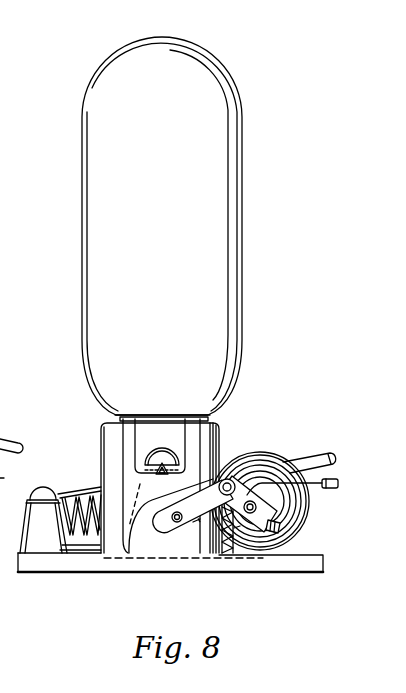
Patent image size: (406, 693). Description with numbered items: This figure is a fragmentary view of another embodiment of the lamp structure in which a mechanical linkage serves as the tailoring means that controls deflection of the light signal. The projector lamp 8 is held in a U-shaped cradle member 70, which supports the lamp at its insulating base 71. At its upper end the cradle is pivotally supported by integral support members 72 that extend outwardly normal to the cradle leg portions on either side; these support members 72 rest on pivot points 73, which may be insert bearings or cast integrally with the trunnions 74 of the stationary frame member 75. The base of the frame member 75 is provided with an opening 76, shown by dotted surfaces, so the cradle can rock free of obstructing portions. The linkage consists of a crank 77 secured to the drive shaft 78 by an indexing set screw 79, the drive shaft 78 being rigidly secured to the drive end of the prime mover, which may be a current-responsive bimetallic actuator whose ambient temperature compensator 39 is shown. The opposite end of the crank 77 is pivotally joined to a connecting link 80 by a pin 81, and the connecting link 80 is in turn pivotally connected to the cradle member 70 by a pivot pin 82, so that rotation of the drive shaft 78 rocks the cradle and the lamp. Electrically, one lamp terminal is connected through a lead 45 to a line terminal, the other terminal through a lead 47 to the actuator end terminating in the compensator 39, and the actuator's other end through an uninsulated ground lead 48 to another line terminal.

The projector lamp 8 is at (107, 240).
The U-shaped cradle member 70 is at (151, 566).
The stationary frame member 75 is at (38, 565).
The opening 76 is at (85, 560).
The trunnions 74 is at (128, 443).
The integral support members 72 is at (163, 456).
The pivot points 73 is at (163, 476).
The connecting link 80 is at (171, 516).
The ambient temperature compensator 39 is at (306, 521).
The lead 45 is at (298, 460).
The crank 77 is at (260, 515).
The pivot pin 82 is at (173, 519).
The pin 81 is at (230, 479).
The drive shaft 78 is at (262, 506).
The indexing set screw 79 is at (281, 530).
The lead 48 is at (319, 486).
The insulating base 71 is at (193, 522).
The lead 47 is at (234, 528).